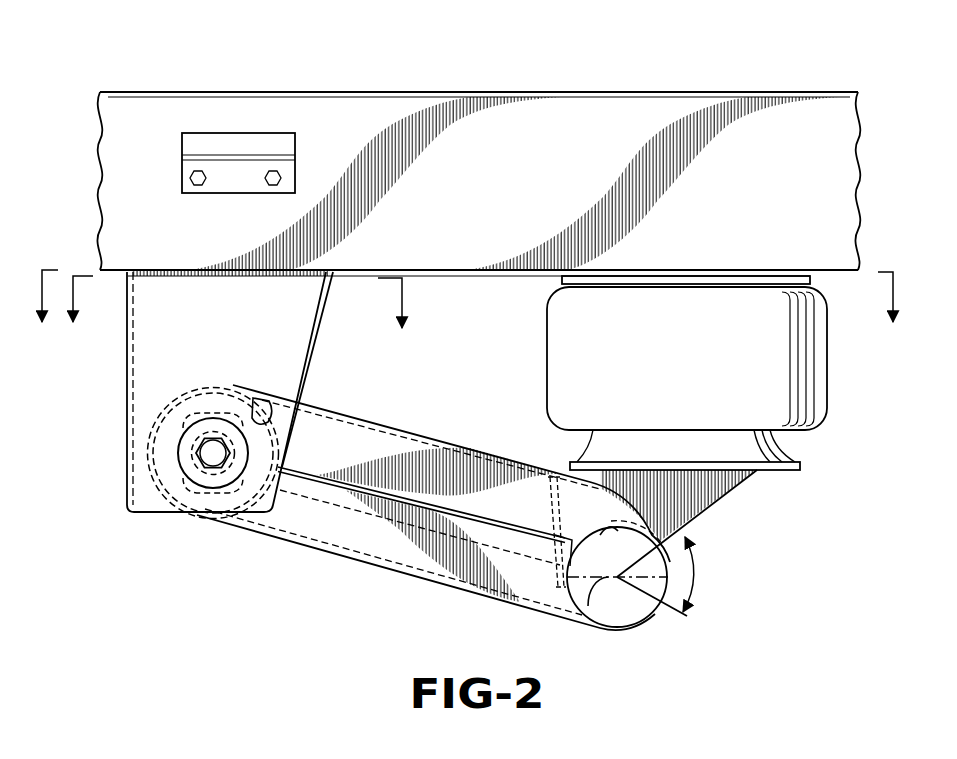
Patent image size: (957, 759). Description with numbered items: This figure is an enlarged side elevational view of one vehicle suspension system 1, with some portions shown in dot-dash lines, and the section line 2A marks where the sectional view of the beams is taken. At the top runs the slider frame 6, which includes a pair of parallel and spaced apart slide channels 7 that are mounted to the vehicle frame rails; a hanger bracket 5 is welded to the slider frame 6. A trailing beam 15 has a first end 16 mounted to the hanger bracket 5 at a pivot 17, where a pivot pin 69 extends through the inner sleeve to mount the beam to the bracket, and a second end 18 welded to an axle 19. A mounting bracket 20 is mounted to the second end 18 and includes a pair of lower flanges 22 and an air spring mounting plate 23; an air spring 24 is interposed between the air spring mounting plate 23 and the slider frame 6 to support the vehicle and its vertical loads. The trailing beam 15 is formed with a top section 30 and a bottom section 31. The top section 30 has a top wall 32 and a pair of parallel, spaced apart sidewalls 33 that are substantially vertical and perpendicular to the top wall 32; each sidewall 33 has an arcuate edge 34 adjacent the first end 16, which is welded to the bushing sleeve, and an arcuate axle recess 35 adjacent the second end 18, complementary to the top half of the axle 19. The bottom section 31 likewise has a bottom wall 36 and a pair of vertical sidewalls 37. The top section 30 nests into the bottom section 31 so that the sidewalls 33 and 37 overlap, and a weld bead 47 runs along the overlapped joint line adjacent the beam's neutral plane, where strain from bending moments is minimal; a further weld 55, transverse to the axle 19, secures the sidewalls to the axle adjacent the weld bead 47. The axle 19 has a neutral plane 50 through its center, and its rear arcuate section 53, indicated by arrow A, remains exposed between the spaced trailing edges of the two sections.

The suspension system 1 is at (302, 640).
The hanger bracket 5 is at (150, 382).
The slider frame 6 is at (752, 92).
The slide channel 7 is at (622, 105).
The trailing beam 15 is at (448, 445).
The first end 16 is at (250, 388).
The pivot 17 is at (218, 457).
The second end 18 is at (632, 632).
The axle 19 is at (636, 610).
The mounting bracket 20 is at (714, 509).
The lower flange 22 is at (742, 484).
The air spring mounting plate 23 is at (788, 470).
The air spring 24 is at (566, 321).
The top section 30 is at (490, 455).
The bottom section 31 is at (397, 578).
The top wall 32 is at (413, 434).
The sidewall 33 is at (330, 434).
The arcuate edge 34 is at (262, 408).
The arcuate axle recess 35 is at (622, 516).
The bottom wall 36 is at (508, 603).
The sidewall 37 is at (332, 540).
The weld bead 47 is at (505, 528).
The neutral plane 50 is at (583, 612).
The rear arcuate section 53 is at (660, 586).
The weld 55 is at (563, 533).
The pivot pin 69 is at (229, 460).
The arrow A is at (690, 574).
The section line 2A is at (466, 311).